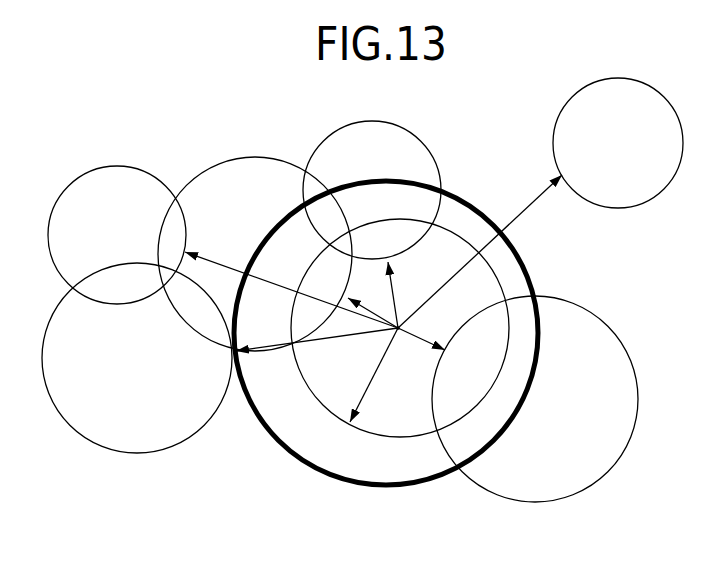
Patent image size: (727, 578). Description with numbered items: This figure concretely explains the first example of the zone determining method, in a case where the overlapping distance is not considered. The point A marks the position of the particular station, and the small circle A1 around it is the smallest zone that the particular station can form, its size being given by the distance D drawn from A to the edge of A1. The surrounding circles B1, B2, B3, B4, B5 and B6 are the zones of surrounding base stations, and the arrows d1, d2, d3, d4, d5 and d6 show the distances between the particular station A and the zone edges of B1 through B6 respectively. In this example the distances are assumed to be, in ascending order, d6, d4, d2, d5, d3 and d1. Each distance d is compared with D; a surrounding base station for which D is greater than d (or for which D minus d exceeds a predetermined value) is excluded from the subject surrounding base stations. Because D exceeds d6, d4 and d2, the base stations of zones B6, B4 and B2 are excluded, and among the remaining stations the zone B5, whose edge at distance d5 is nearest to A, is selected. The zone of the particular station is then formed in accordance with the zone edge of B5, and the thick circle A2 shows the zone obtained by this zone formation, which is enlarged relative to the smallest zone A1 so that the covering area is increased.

The particular station A is at (407, 308).
The smallest zone A1 is at (322, 405).
The formed zone A2 is at (377, 487).
The zone of surrounding base station B1 is at (618, 143).
The zone of surrounding base station B2 is at (372, 174).
The zone of surrounding base station B3 is at (111, 229).
The zone of surrounding base station B4 is at (255, 235).
The zone of surrounding base station B5 is at (137, 358).
The zone of surrounding base station B6 is at (535, 399).
The distance D is at (374, 375).
The distance d1 is at (480, 251).
The distance d2 is at (408, 289).
The distance d3 is at (291, 278).
The distance d4 is at (373, 303).
The distance d5 is at (317, 332).
The distance d6 is at (425, 328).